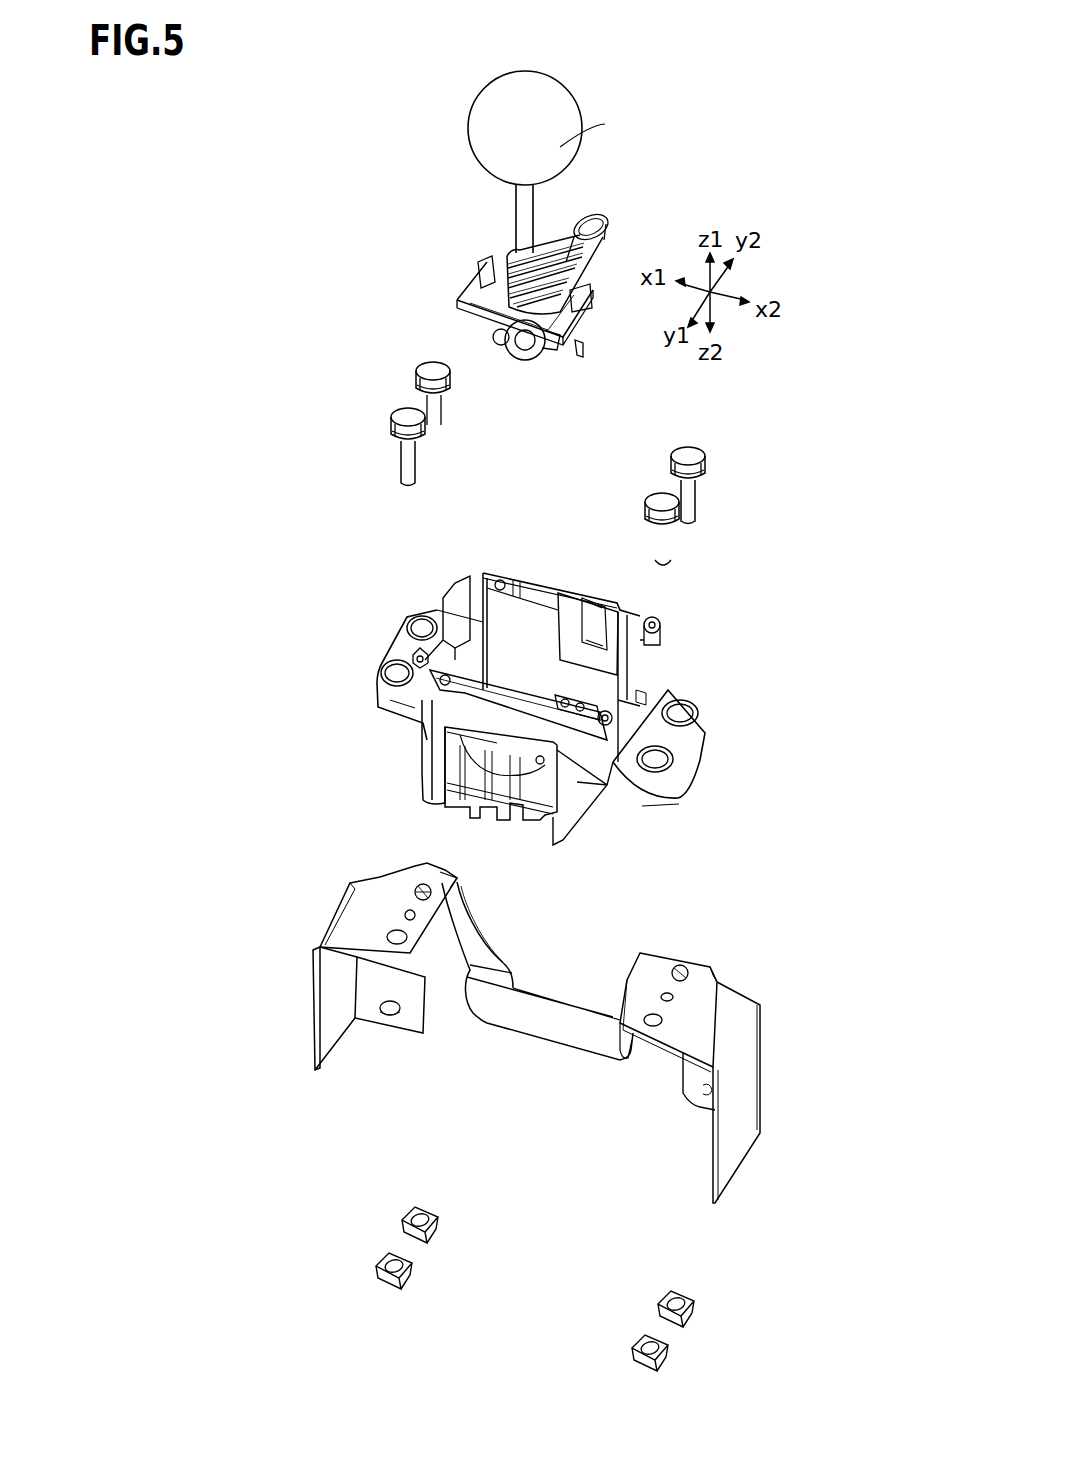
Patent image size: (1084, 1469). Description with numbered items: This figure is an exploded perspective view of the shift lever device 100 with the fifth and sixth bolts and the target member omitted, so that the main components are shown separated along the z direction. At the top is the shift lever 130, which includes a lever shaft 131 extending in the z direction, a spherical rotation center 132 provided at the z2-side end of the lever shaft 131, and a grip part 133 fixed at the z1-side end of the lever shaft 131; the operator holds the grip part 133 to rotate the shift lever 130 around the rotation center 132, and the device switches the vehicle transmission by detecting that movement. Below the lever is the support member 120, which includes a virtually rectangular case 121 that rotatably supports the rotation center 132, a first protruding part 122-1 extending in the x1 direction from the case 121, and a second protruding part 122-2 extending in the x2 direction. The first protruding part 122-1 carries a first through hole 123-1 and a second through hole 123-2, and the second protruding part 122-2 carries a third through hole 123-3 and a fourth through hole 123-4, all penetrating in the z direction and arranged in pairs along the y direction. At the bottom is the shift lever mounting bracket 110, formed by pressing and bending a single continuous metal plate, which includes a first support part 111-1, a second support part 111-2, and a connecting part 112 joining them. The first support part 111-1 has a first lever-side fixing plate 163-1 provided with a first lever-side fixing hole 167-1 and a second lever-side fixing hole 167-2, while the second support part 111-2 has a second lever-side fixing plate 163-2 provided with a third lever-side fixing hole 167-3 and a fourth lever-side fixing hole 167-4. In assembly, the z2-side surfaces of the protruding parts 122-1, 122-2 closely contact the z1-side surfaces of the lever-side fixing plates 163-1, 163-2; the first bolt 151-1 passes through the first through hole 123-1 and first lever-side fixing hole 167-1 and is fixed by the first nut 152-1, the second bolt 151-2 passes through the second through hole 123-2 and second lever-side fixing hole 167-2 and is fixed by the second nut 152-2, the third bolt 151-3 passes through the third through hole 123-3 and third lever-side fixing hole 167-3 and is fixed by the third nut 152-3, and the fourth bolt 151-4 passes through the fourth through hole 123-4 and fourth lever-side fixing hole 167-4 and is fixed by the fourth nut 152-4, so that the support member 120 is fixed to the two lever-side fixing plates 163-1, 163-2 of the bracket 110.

The shift lever device 100 is at (414, 66).
The shift lever mounting bracket 110 is at (519, 1016).
The first support part 111-1 is at (373, 982).
The second support part 111-2 is at (643, 1053).
The connecting part 112 is at (557, 1037).
The support member 120 is at (450, 605).
The case 121 is at (427, 788).
The first protruding part 122-1 is at (397, 654).
The second protruding part 122-2 is at (630, 782).
The first through hole 123-1 is at (396, 672).
The second through hole 123-2 is at (422, 628).
The third through hole 123-3 is at (660, 760).
The fourth through hole 123-4 is at (680, 713).
The shift lever 130 is at (497, 112).
The lever shaft 131 is at (521, 218).
The rotation center 132 is at (516, 358).
The grip part 133 is at (560, 147).
The first bolt 151-1 is at (405, 418).
The second bolt 151-2 is at (432, 372).
The third bolt 151-3 is at (661, 503).
The fourth bolt 151-4 is at (687, 457).
The first nut 152-1 is at (385, 1262).
The second nut 152-2 is at (408, 1213).
The third nut 152-3 is at (638, 1341).
The fourth nut 152-4 is at (665, 1296).
The first lever-side fixing plate 163-1 is at (455, 872).
The second lever-side fixing plate 163-2 is at (663, 963).
The first lever-side fixing hole 167-1 is at (378, 935).
The second lever-side fixing hole 167-2 is at (418, 890).
The third lever-side fixing hole 167-3 is at (620, 1017).
The fourth lever-side fixing hole 167-4 is at (687, 973).